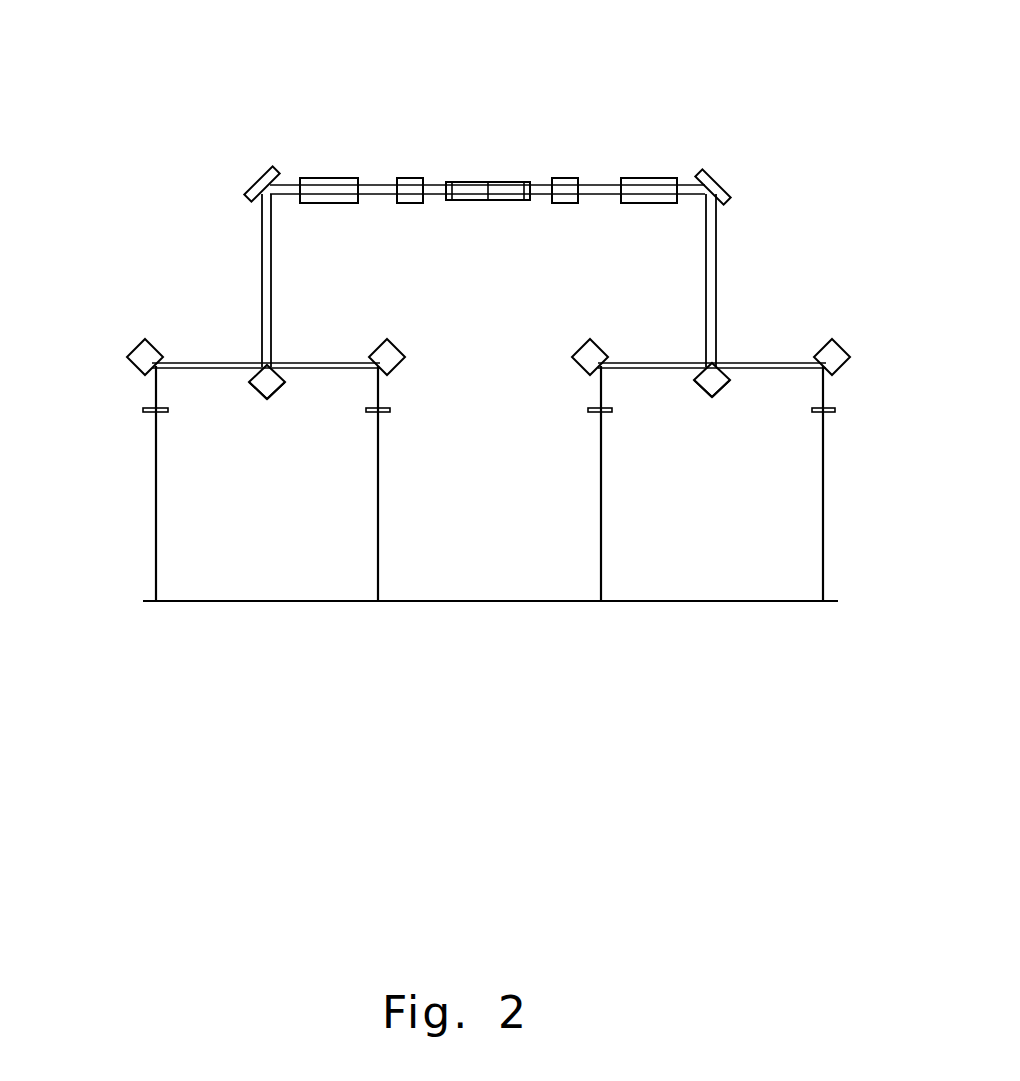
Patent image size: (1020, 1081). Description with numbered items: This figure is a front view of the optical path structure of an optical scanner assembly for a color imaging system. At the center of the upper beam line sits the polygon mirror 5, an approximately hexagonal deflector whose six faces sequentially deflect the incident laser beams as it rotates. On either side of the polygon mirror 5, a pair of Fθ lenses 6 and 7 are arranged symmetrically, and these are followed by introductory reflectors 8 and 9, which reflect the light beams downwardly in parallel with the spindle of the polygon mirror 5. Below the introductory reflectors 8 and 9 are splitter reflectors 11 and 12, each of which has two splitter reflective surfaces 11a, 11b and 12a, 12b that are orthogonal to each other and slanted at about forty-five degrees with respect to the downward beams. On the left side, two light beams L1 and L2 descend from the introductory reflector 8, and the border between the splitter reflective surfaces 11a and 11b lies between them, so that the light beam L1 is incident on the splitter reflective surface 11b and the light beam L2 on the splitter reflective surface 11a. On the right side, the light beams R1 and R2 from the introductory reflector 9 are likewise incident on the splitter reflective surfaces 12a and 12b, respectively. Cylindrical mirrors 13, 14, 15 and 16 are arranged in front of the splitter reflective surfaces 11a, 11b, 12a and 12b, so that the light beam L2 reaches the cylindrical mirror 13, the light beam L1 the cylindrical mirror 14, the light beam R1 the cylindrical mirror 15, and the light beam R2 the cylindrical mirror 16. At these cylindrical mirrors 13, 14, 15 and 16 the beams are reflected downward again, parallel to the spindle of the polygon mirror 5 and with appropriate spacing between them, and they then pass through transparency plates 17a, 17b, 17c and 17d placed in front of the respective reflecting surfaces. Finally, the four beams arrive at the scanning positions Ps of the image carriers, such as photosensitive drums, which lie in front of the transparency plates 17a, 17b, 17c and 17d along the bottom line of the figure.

The polygon mirror 5 is at (492, 182).
The Fθ lens 6 is at (386, 152).
The Fθ lens 7 is at (611, 150).
The introductory reflector 8 is at (258, 182).
The introductory reflector 9 is at (714, 183).
The splitter reflector 11 is at (268, 399).
The splitter reflective surface 11a is at (253, 384).
The splitter reflective surface 11b is at (283, 384).
The splitter reflector 12 is at (712, 397).
The splitter reflective surface 12a is at (698, 385).
The splitter reflective surface 12b is at (724, 387).
The cylindrical mirror 13 is at (135, 348).
The cylindrical mirror 14 is at (397, 345).
The cylindrical mirror 15 is at (583, 348).
The cylindrical mirror 16 is at (840, 348).
The transparency plate 17a is at (147, 411).
The transparency plate 17b is at (388, 412).
The transparency plate 17c is at (593, 412).
The transparency plate 17d is at (828, 412).
The light beam L1 is at (273, 262).
The light beam L2 is at (262, 292).
The light beam R1 is at (705, 330).
The light beam R2 is at (717, 285).
The scanning position Ps is at (650, 601).